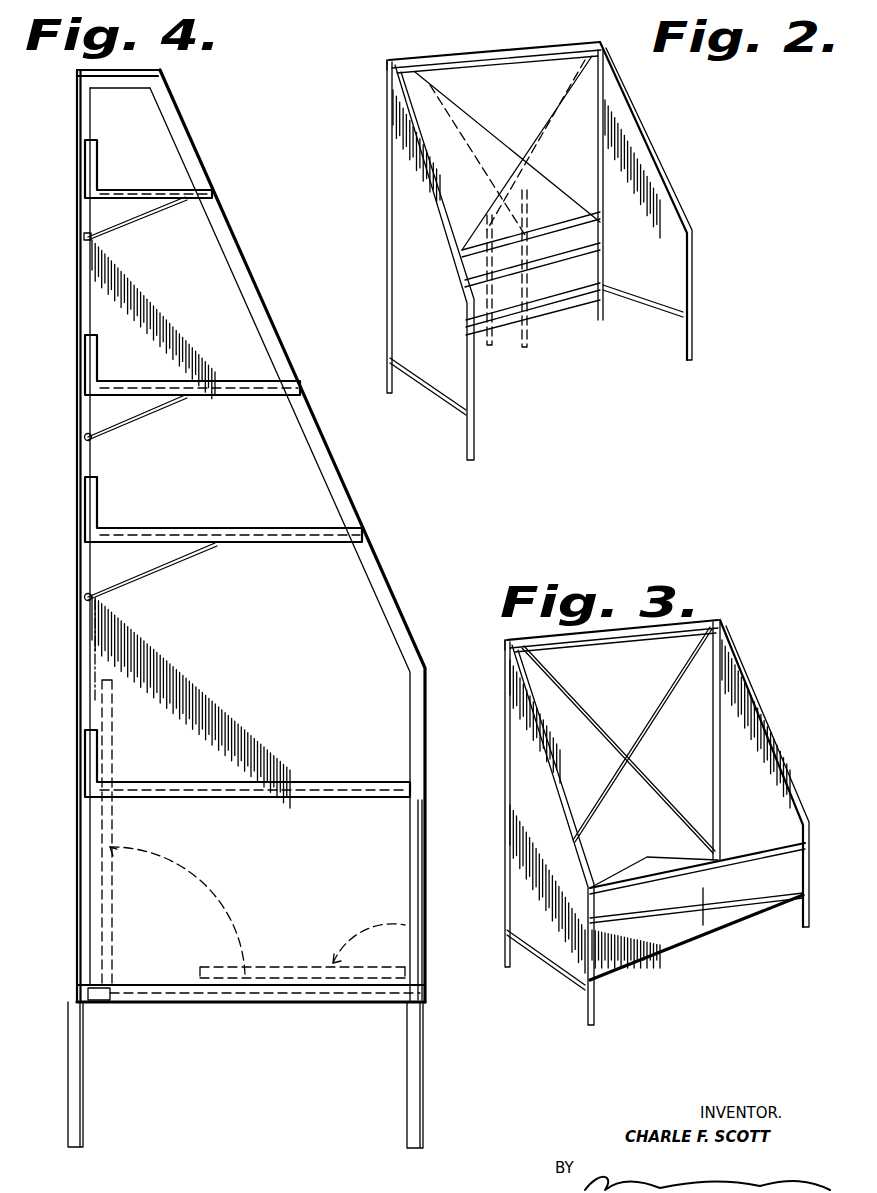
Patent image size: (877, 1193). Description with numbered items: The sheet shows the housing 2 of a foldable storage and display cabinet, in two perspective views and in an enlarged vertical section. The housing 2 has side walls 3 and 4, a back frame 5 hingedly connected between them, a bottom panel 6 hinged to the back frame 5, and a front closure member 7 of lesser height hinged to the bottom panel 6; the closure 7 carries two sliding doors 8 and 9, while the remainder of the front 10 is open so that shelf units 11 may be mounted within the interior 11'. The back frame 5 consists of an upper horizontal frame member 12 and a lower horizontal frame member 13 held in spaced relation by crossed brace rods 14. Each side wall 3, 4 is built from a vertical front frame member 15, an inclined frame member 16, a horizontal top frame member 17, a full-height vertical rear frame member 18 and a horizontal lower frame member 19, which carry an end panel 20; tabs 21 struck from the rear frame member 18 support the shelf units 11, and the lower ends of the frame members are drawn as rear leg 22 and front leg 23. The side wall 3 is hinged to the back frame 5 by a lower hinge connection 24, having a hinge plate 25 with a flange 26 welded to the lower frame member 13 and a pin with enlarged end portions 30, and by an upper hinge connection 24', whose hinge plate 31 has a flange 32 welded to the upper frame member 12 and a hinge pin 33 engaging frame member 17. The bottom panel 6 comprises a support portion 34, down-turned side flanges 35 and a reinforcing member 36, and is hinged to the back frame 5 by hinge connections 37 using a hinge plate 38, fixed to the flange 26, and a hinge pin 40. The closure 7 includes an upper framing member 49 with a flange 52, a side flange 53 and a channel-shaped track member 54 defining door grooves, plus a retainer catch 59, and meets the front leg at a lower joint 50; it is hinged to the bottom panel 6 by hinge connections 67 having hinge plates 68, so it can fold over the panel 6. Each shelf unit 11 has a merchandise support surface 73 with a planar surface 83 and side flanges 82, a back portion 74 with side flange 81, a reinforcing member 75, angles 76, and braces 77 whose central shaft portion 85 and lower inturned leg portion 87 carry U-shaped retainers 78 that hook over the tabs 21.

In FIG. 4, the housing 2 is at (350, 492).
In FIG. 2, the housing 2 is at (640, 120).
In FIG. 3, the housing 2 is at (750, 685).
In FIG. 4, the side wall 3 is at (372, 600).
In FIG. 2, the side wall 3 is at (627, 95).
In FIG. 3, the side wall 3 is at (738, 665).
In FIG. 2, the side wall 4 is at (392, 200).
In FIG. 3, the side wall 4 is at (505, 868).
In FIG. 4, the back frame 5 is at (77, 500).
In FIG. 2, the back frame 5 is at (547, 44).
In FIG. 3, the back frame 5 is at (568, 635).
In FIG. 4, the bottom panel 6 is at (368, 1002).
In FIG. 2, the bottom panel 6 is at (540, 305).
In FIG. 3, the bottom panel 6 is at (622, 895).
In FIG. 4, the front closure member 7 is at (425, 897).
In FIG. 2, the front closure member 7 is at (605, 255).
In FIG. 3, the front closure member 7 is at (735, 925).
In FIG. 4, the sliding door 8 is at (425, 923).
In FIG. 3, the sliding door 8 is at (752, 910).
In FIG. 4, the sliding door 9 is at (413, 888).
In FIG. 3, the sliding door 9 is at (677, 950).
In FIG. 4, the front 10 is at (425, 670).
In FIG. 2, the front 10 is at (688, 240).
In FIG. 3, the front 10 is at (805, 832).
In FIG. 4, the shelf unit 11 is at (148, 190).
In FIG. 2, the interior 11' is at (674, 170).
In FIG. 3, the interior 11' is at (792, 770).
In FIG. 4, the upper horizontal frame member 12 is at (80, 90).
In FIG. 2, the upper horizontal frame member 12 is at (475, 50).
In FIG. 3, the upper horizontal frame member 12 is at (645, 640).
In FIG. 4, the lower horizontal frame member 13 is at (77, 992).
In FIG. 3, the lower horizontal frame member 13 is at (679, 872).
In FIG. 4, the brace rods 14 is at (82, 447).
In FIG. 2, the brace rods 14 is at (540, 135).
In FIG. 3, the brace rods 14 is at (635, 785).
In FIG. 4, the frame member 15 is at (426, 728).
In FIG. 2, the frame member 15 is at (688, 225).
In FIG. 3, the frame member 15 is at (806, 868).
In FIG. 4, the frame member 16 is at (380, 562).
In FIG. 2, the frame member 16 is at (680, 205).
In FIG. 3, the frame member 16 is at (790, 800).
In FIG. 4, the frame member 17 is at (127, 75).
In FIG. 2, the frame member 17 is at (610, 45).
In FIG. 3, the frame member 17 is at (715, 620).
In FIG. 4, the frame member 18 is at (82, 411).
In FIG. 2, the frame member 18 is at (389, 143).
In FIG. 3, the frame member 18 is at (713, 695).
In FIG. 2, the frame member 19 is at (445, 395).
In FIG. 3, the frame member 19 is at (565, 972).
In FIG. 4, the end panel 20 is at (235, 285).
In FIG. 2, the end panel 20 is at (640, 298).
In FIG. 3, the end panel 20 is at (722, 758).
In FIG. 4, the tabs 21 is at (90, 278).
In FIG. 2, the tabs 21 is at (598, 187).
In FIG. 3, the tabs 21 is at (713, 788).
In FIG. 4, the rear leg 22 is at (83, 1107).
In FIG. 2, the rear leg 22 is at (600, 320).
In FIG. 4, the front leg 23 is at (423, 1065).
In FIG. 2, the front leg 23 is at (692, 355).
In FIG. 3, the front leg 23 is at (808, 922).
In FIG. 4, the hinge connection 24 is at (132, 1012).
In FIG. 4, the hinge connection 24' is at (69, 64).
In FIG. 2, the hinge connection 24' is at (585, 31).
In FIG. 3, the hinge connection 24' is at (740, 604).
In FIG. 4, the hinge plate 25 is at (92, 1005).
In FIG. 4, the flange 26 is at (80, 998).
In FIG. 4, the enlarged end portions 30 is at (107, 1005).
In FIG. 4, the hinge plate 31 is at (137, 73).
In FIG. 4, the flange 32 is at (80, 82).
In FIG. 4, the hinge pin 33 is at (127, 72).
In FIG. 2, the hinge pin 33 is at (392, 62).
In FIG. 4, the support portion 34 is at (192, 985).
In FIG. 3, the support portion 34 is at (652, 885).
In FIG. 4, the side flanges 35 is at (190, 998).
In FIG. 2, the side flanges 35 is at (603, 222).
In FIG. 4, the reinforcing member 36 is at (268, 1002).
In FIG. 2, the reinforcing member 36 is at (603, 243).
In FIG. 4, the hinge connection 37 is at (85, 1005).
In FIG. 4, the hinge plate 38 is at (88, 982).
In FIG. 4, the hinge pin 40 is at (103, 992).
In FIG. 2, the hinge pin 40 is at (603, 283).
In FIG. 4, the upper framing member 49 is at (425, 805).
In FIG. 4, the front rail joint 50 is at (424, 997).
In FIG. 3, the front rail joint 50 is at (618, 975).
In FIG. 4, the upper or lower flange 52 is at (423, 785).
In FIG. 4, the side flange 53 is at (408, 805).
In FIG. 4, the track member 54 is at (420, 820).
In FIG. 3, the track member 54 is at (643, 912).
In FIG. 4, the retainer catch 59 is at (400, 800).
In FIG. 4, the hinge connection 67 is at (393, 1005).
In FIG. 4, the hinge plate 68 is at (398, 985).
In FIG. 4, the merchandise support surface 73 is at (155, 527).
In FIG. 4, the back portion 74 is at (95, 498).
In FIG. 4, the reinforcing member 75 is at (268, 797).
In FIG. 4, the angle 76 is at (272, 543).
In FIG. 4, the brace 77 is at (158, 570).
In FIG. 4, the retainer 78 is at (92, 440).
In FIG. 4, the side flange 81 is at (85, 760).
In FIG. 4, the side flanges 82 is at (322, 543).
In FIG. 4, the planar support surface 83 is at (152, 780).
In FIG. 4, the central shaft portion 85 is at (148, 412).
In FIG. 4, the lower inturned leg portion 87 is at (87, 600).